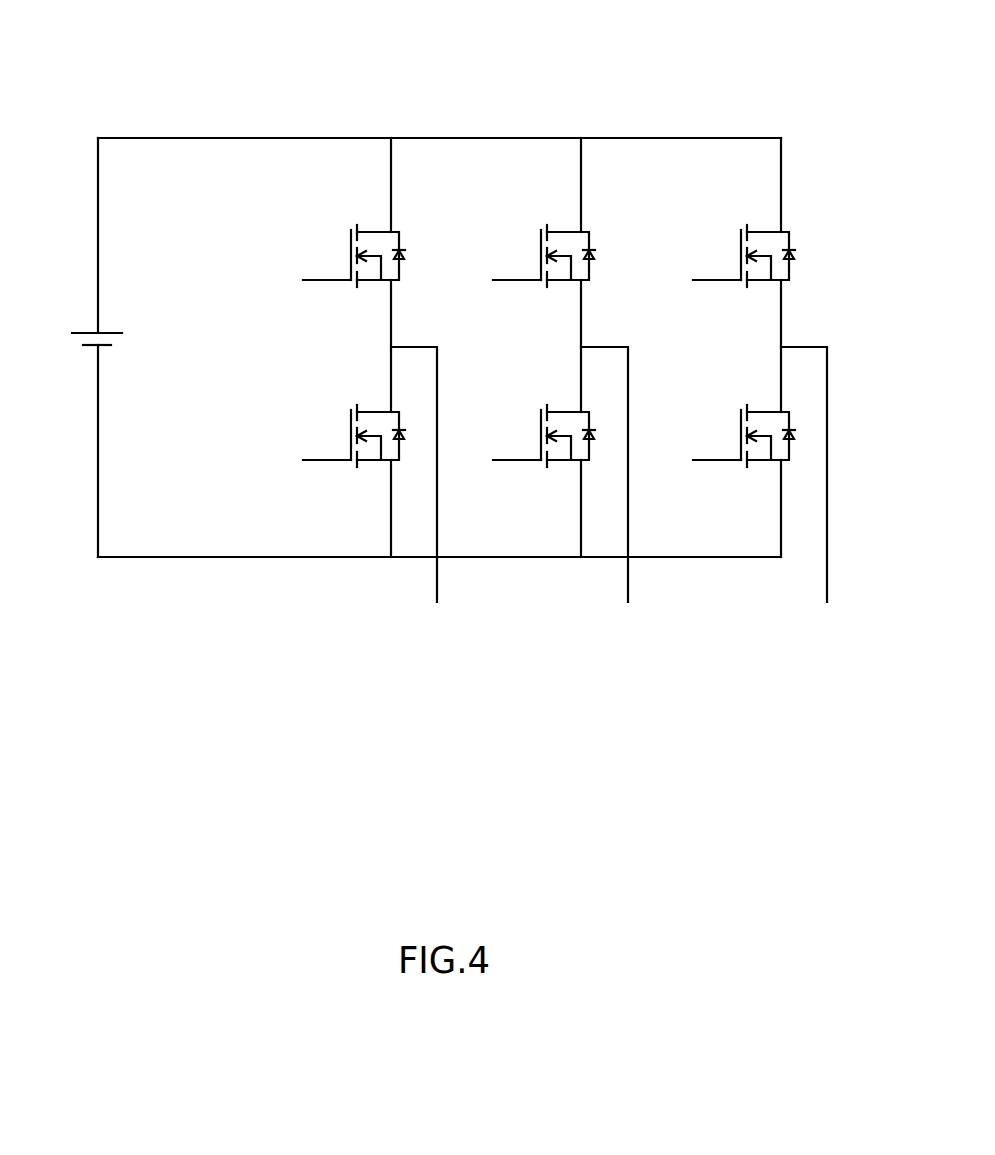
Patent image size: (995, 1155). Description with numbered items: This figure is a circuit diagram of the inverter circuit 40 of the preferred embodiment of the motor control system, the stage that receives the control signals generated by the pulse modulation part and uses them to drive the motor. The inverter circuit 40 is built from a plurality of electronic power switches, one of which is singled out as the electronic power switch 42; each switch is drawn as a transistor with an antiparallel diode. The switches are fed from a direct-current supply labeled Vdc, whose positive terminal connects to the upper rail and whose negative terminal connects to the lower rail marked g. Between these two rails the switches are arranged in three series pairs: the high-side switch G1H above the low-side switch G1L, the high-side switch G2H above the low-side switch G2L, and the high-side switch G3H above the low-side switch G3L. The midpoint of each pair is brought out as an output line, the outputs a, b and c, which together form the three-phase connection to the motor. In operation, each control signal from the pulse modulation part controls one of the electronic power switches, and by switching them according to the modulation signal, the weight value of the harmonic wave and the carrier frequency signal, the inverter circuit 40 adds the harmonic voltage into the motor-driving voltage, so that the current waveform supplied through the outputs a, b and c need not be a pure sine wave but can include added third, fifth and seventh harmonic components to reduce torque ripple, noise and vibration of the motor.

The inverter circuit 40 is at (613, 115).
The electronic power switch 42 is at (380, 232).
The DC voltage source Vdc is at (84, 347).
The ground node g is at (226, 560).
The phase-1 high-side switch G1H is at (342, 256).
The phase-1 low-side switch G1L is at (342, 436).
The phase-2 high-side switch G2H is at (532, 256).
The phase-2 low-side switch G2L is at (532, 436).
The phase-3 high-side switch G3H is at (732, 256).
The phase-3 low-side switch G3L is at (732, 436).
The phase-a output terminal a is at (424, 469).
The phase-b output terminal b is at (616, 469).
The phase-c output terminal c is at (816, 469).